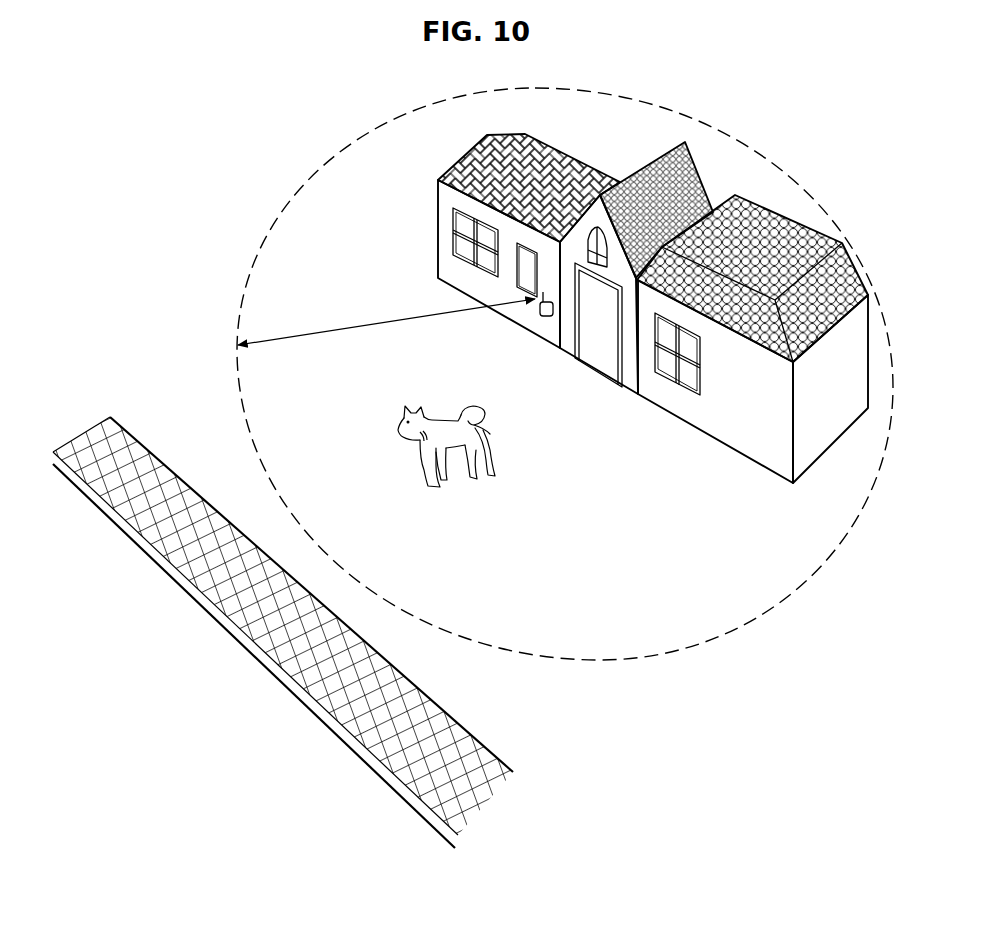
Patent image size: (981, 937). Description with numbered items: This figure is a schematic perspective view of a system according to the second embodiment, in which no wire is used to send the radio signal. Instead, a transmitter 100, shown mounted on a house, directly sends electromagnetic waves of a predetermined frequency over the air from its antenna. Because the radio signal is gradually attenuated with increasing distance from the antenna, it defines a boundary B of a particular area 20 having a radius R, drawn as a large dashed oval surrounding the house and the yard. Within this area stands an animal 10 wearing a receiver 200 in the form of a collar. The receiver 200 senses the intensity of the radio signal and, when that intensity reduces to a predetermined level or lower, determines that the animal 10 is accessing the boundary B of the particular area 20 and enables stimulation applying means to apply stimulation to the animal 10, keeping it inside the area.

The animal 10 is at (474, 436).
The particular area 20 is at (600, 510).
The transmitter 100 is at (540, 306).
The receiver (collar) 200 is at (421, 441).
The radius R is at (386, 322).
The boundary B is at (727, 633).